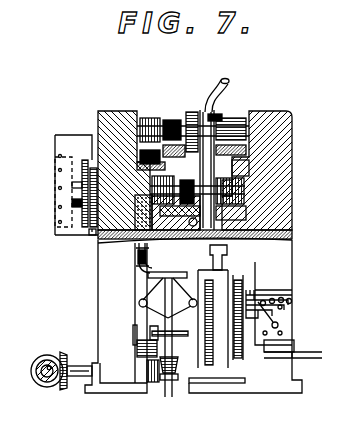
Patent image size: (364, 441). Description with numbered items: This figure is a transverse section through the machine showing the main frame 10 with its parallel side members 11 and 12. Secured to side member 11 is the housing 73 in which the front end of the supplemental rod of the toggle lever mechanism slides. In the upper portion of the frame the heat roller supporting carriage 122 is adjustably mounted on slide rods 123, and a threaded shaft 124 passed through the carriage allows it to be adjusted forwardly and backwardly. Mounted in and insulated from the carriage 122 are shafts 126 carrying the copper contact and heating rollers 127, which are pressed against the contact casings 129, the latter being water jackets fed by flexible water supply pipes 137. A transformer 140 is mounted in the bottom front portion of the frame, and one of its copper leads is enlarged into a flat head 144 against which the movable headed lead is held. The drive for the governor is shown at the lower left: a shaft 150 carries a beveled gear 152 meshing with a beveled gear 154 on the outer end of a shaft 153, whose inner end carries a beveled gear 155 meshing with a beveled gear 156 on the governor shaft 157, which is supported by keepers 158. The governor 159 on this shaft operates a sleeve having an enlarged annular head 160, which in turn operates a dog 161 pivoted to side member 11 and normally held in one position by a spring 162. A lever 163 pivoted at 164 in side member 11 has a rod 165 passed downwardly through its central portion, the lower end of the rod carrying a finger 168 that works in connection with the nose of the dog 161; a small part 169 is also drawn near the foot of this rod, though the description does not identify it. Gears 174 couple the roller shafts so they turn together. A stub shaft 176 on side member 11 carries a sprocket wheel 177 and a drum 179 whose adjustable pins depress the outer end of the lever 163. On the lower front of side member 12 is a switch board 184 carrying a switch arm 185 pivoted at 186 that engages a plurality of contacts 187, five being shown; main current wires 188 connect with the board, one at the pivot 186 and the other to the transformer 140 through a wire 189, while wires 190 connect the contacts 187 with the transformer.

The main frame 10 is at (294, 116).
The side member 11 is at (101, 114).
The side member 12 is at (272, 113).
The housing 73 is at (62, 136).
The heat roller supporting carriage 122 is at (252, 196).
The slide rods 123 is at (250, 222).
The threaded shaft 124 is at (192, 228).
The shafts 126 is at (137, 135).
The copper contact and heating rollers 127 is at (194, 112).
The contact casings 129 is at (223, 112).
The flexible water supply pipes 137 is at (226, 84).
The transformer 140 is at (220, 302).
The flat head 144 is at (227, 258).
The shaft 150 is at (43, 377).
The beveled gear 152 is at (47, 355).
The shaft 153 is at (82, 378).
The beveled gear 154 is at (62, 392).
The beveled gear 155 is at (162, 381).
The beveled gear 156 is at (176, 372).
The governor shaft 157 is at (178, 345).
The keepers 158 is at (148, 278).
The governor 159 is at (140, 310).
The enlarged annular head 160 is at (215, 383).
The dog 161 is at (133, 338).
The spring 162 is at (136, 356).
The lever 163 is at (78, 237).
The pivot 164 is at (92, 238).
The rod 165 is at (135, 312).
The finger 168 is at (148, 330).
The clamp 169 is at (136, 258).
The gears 174 is at (175, 118).
The stub shaft 176 is at (73, 199).
The sprocket wheel 177 is at (82, 172).
The drum 179 is at (55, 171).
The switch board 184 is at (290, 337).
The switch arm 185 is at (283, 309).
The pivot 186 is at (282, 324).
The contacts 187 is at (292, 301).
The main current wires 188 is at (320, 353).
The wire 189 is at (258, 336).
The wires 190 is at (259, 292).